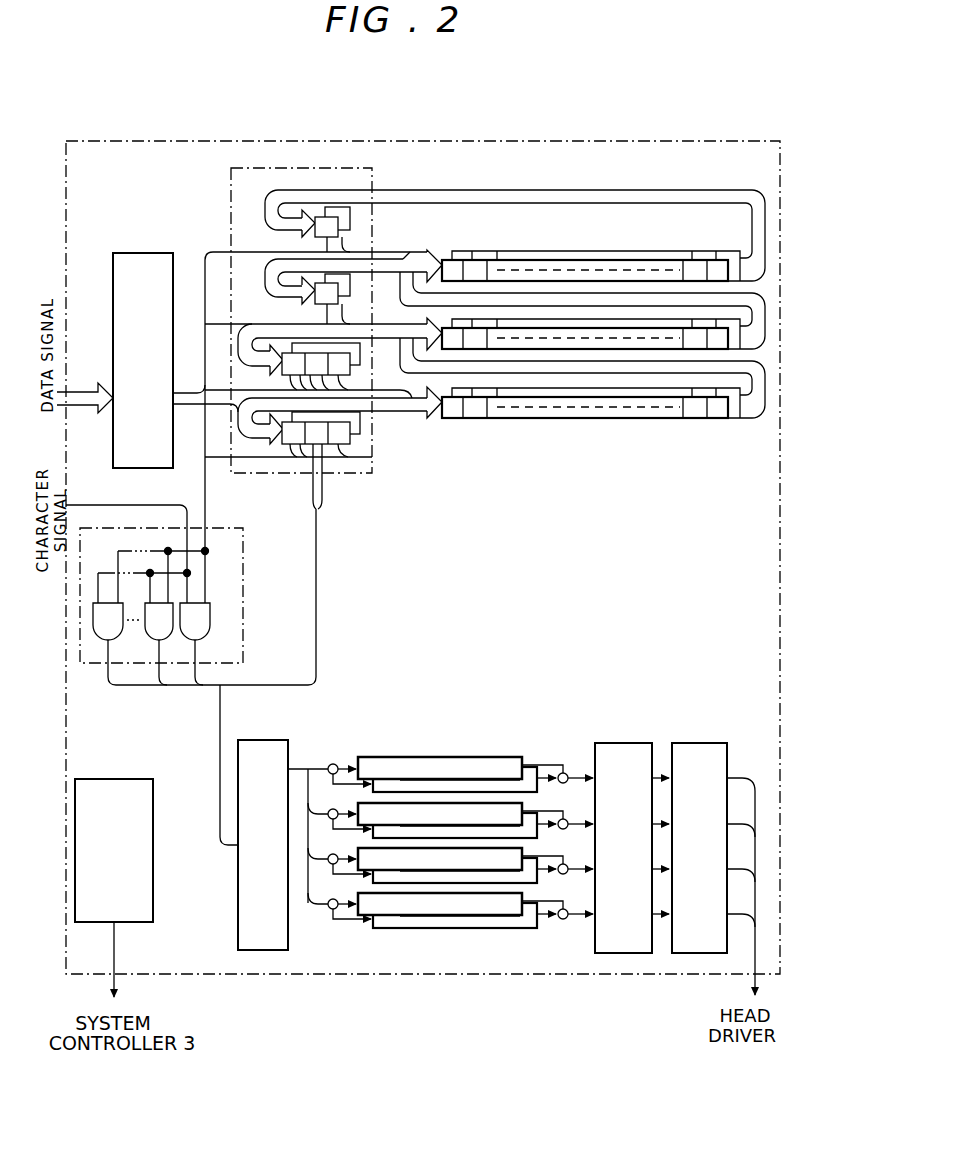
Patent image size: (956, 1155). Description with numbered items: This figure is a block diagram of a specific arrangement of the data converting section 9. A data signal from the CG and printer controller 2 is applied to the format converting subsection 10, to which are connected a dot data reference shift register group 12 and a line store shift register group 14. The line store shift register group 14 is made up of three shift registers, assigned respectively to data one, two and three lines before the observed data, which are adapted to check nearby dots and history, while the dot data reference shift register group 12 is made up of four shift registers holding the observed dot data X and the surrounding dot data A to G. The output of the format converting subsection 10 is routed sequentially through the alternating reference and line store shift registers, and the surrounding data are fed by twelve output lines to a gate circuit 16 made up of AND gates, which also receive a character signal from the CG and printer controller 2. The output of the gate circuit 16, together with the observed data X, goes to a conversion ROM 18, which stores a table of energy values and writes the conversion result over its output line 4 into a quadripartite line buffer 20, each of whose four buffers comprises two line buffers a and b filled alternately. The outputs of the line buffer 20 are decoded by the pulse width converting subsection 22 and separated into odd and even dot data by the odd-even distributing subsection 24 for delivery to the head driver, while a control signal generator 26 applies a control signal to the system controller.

The data converting section 9 is at (186, 141).
The format converting subsection 10 is at (140, 253).
The dot data reference shift register group 12 is at (231, 212).
The line store shift register group 14 is at (478, 408).
The gate circuit 16 is at (188, 686).
The CG and printer controller 2 is at (309, 663).
The conversion ROM 18 is at (238, 892).
The dot data line 4 is at (292, 775).
The quadripartite line buffer 20 is at (460, 826).
The pulse width converting subsection 22 is at (622, 743).
The odd-even distributing subsection 24 is at (696, 743).
The control signal generator 26 is at (153, 837).